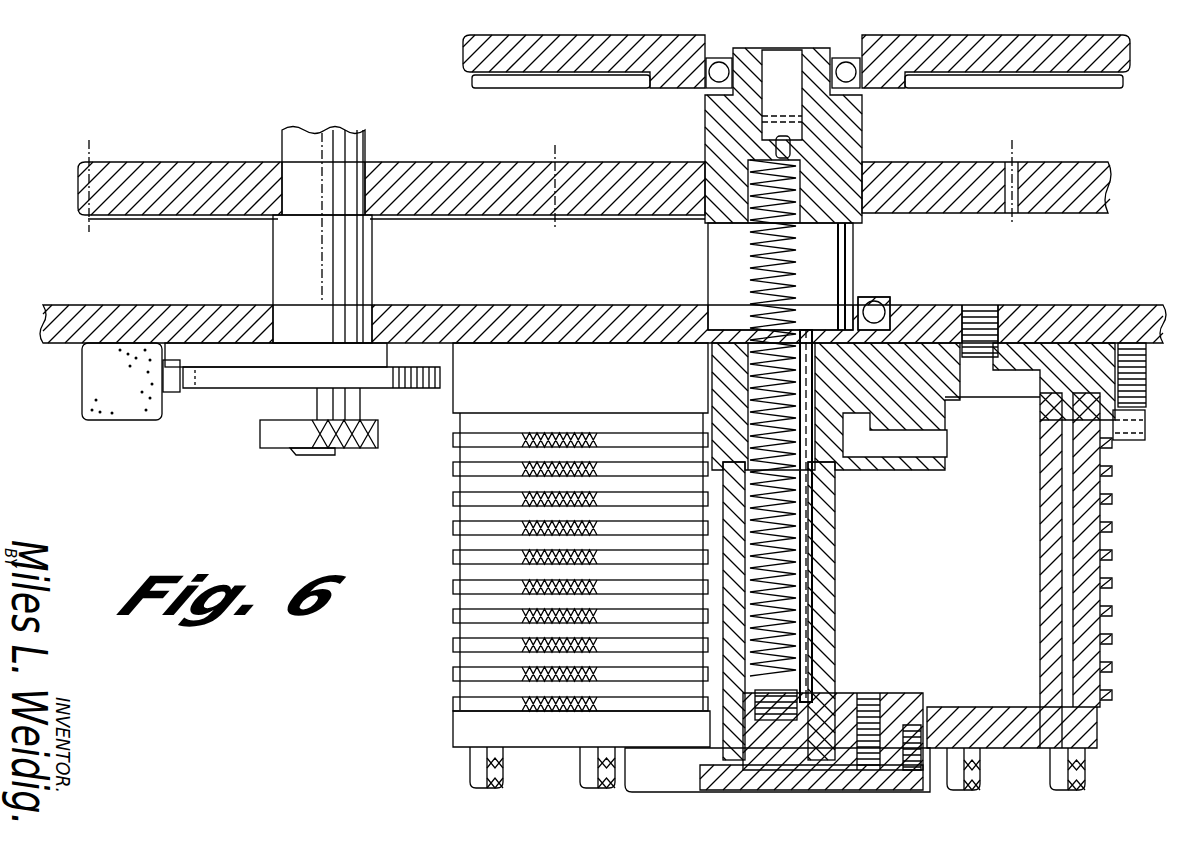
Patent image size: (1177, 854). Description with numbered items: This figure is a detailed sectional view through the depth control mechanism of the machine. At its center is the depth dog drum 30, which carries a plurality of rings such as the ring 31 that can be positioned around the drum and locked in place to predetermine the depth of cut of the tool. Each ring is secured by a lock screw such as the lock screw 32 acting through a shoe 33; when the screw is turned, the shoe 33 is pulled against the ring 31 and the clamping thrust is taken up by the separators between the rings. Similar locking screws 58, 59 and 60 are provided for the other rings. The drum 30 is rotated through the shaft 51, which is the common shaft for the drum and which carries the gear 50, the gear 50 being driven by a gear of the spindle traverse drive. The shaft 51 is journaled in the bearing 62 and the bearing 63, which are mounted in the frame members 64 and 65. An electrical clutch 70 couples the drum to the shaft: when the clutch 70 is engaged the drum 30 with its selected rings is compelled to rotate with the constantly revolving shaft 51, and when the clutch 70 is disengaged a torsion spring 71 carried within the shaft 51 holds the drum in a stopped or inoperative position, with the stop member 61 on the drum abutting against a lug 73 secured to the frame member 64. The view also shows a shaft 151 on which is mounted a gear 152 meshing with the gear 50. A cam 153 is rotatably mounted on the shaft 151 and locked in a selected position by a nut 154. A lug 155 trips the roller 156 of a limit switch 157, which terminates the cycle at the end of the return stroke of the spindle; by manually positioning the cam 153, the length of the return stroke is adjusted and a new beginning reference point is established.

The depth dog drum 30 is at (1102, 726).
The ring 31 is at (458, 555).
The lock screw 32 is at (1062, 791).
The shoe 33 is at (1106, 448).
The gear 50 is at (970, 182).
The shaft 51 is at (855, 252).
The locking screw 58 is at (970, 791).
The locking screw 59 is at (600, 789).
The locking screw 60 is at (490, 789).
The stop member 61 is at (1124, 433).
The bearing 62 is at (866, 90).
The bearing 63 is at (893, 292).
The frame member 64 is at (1076, 312).
The frame member 65 is at (882, 50).
The electrical clutch 70 is at (948, 440).
The torsion spring 71 is at (768, 658).
The lug 73 is at (1136, 330).
The shaft 151 is at (374, 255).
The gear 152 is at (462, 170).
The cam 153 is at (244, 376).
The nut 154 is at (355, 450).
The lug 155 is at (196, 390).
The roller 156 is at (174, 352).
The limit switch 157 is at (102, 390).